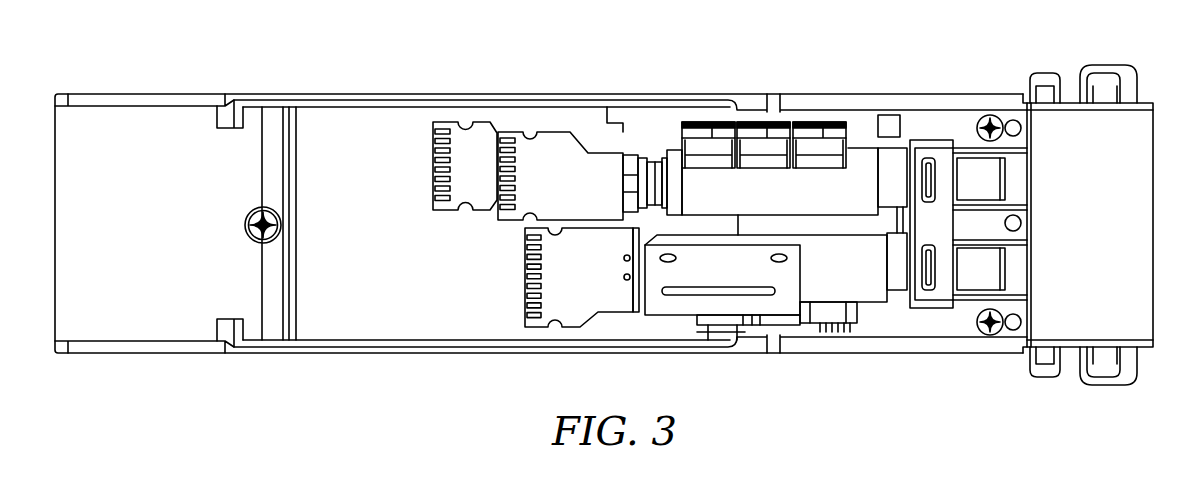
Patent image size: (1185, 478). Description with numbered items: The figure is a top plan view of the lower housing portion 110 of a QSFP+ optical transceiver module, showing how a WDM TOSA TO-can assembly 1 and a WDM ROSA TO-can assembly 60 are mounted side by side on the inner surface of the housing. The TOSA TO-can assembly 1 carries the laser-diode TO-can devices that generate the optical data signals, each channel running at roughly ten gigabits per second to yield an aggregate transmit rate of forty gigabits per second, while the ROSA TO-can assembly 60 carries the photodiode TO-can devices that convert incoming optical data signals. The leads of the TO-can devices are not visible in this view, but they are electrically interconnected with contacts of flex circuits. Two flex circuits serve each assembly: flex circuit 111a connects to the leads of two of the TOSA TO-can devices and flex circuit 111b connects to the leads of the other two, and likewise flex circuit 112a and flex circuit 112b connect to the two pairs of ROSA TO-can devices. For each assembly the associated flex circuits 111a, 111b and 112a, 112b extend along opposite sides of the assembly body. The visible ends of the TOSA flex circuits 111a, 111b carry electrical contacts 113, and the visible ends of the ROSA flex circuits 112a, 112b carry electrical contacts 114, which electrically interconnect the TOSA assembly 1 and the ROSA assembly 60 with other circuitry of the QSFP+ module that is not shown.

The lower housing portion 110 is at (975, 37).
The WDM TOSA TO-can assembly 1 is at (862, 160).
The WDM ROSA TO-can assembly 60 is at (860, 285).
The flex circuit 111a is at (587, 193).
The flex circuit 111b is at (478, 157).
The flex circuit 112a is at (596, 312).
The flex circuit 112b is at (572, 290).
The electrical contacts 113 is at (436, 128).
The electrical contacts 114 is at (527, 320).